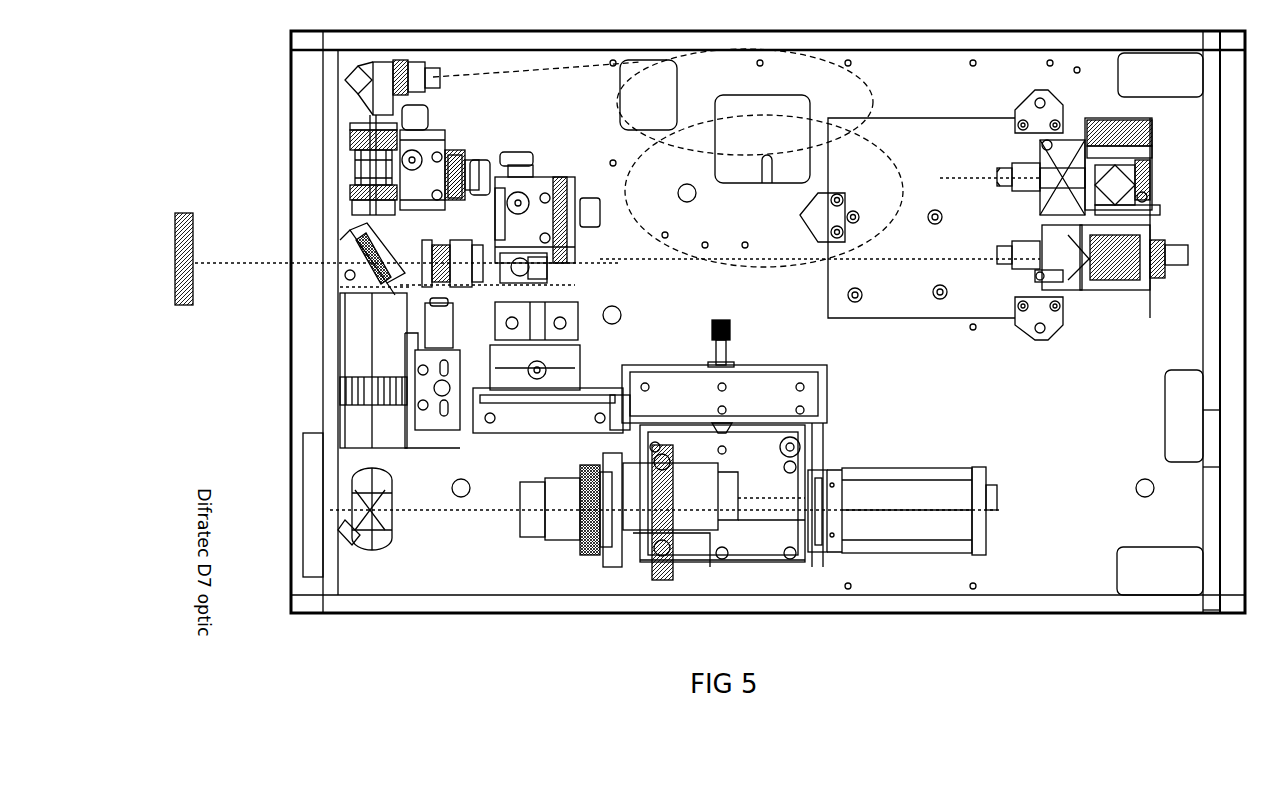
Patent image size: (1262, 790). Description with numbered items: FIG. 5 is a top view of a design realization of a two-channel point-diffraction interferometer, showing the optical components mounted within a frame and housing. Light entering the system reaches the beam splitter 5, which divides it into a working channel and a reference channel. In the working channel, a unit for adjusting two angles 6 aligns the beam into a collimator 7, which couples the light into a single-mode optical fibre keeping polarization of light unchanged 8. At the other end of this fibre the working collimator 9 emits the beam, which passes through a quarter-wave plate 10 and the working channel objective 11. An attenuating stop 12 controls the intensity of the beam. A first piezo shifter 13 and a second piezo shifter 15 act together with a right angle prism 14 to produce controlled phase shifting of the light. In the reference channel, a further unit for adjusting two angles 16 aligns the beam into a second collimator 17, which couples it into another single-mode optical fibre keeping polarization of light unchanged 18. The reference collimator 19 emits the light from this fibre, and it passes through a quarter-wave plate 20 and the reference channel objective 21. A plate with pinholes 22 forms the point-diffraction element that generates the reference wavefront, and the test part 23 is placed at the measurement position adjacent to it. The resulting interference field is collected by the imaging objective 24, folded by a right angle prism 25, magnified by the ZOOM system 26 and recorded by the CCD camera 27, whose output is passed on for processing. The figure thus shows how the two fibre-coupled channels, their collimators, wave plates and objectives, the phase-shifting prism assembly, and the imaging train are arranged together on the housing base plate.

The beam splitter 5 is at (1115, 265).
The unit for adjusting two angles θx, θy 6 is at (1042, 278).
The collimator 7 is at (1017, 242).
The single-mode optical fibre keeping polarization of light unchanged 8 is at (764, 191).
The working collimator 9 is at (527, 265).
The plate (λ/4) 10 is at (532, 207).
The working channel objective 11 is at (487, 252).
The attenuating stop 12 is at (1145, 205).
The first piezo shifter 13 is at (1160, 193).
The right angle prism 14 is at (1122, 178).
The second piezo shifter 15 is at (1135, 148).
The unit for adjusting two angles θx, θy 16 is at (1047, 143).
The second collimator 17 is at (1012, 167).
The single-mode optical fibre keeping polarization of light unchanged 18 is at (653, 102).
The reference collimator 19 is at (396, 82).
The plate (λ/4) 20 is at (352, 126).
The reference channel objective 21 is at (352, 200).
The plate with pinholes 22 is at (352, 258).
The test part 23 is at (176, 246).
The imaging objective 24 is at (357, 325).
The right angle prism 25 is at (356, 528).
The ZOOM system 26 is at (560, 508).
The CCD camera 27 is at (902, 511).